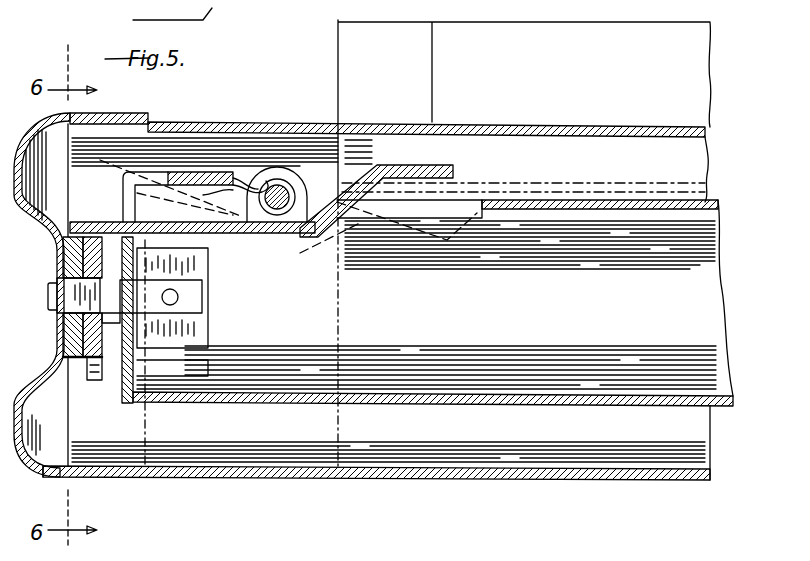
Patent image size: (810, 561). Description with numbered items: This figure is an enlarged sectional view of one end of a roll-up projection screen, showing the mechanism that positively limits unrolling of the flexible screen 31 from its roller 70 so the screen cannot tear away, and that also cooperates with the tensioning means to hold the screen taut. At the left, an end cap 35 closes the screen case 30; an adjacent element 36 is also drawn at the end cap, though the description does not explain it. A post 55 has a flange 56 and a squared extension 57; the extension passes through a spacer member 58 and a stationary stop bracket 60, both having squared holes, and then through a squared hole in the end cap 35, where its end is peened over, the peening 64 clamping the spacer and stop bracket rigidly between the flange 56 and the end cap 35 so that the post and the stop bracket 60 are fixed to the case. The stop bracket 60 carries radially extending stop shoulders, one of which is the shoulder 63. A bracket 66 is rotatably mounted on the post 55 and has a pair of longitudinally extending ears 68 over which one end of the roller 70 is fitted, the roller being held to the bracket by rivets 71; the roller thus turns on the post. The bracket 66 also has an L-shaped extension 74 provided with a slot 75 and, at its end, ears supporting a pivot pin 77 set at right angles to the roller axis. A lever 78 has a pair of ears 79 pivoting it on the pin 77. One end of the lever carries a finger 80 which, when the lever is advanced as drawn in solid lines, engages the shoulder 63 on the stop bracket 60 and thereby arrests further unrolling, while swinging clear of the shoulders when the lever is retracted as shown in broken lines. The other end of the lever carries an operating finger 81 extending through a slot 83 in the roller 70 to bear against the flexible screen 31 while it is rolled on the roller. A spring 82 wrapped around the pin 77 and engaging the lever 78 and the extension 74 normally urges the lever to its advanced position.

The screen case 30 is at (447, 480).
The flexible screen 31 is at (355, 68).
The end cap 35 is at (62, 478).
The block 36 is at (57, 246).
The post 55 is at (197, 291).
The flange 56 is at (133, 368).
The squared extension 57 is at (77, 305).
The spacer member 58 is at (62, 340).
The stationary stop bracket 60 is at (77, 358).
The stop shoulder 63 is at (92, 382).
The peening 64 is at (75, 297).
The bracket 66 is at (118, 384).
The longitudinally extending ears 68 is at (198, 331).
The roller 70 is at (244, 403).
The rivets 71 is at (200, 313).
The L-shaped extension 74 is at (176, 172).
The slot 75 is at (120, 192).
The pivot pin 77 is at (280, 178).
The lever 78 is at (245, 234).
The ears 79 is at (266, 168).
The finger 80 is at (80, 217).
The operating finger 81 is at (428, 165).
The spring 82 is at (243, 183).
The slot 83 is at (478, 220).